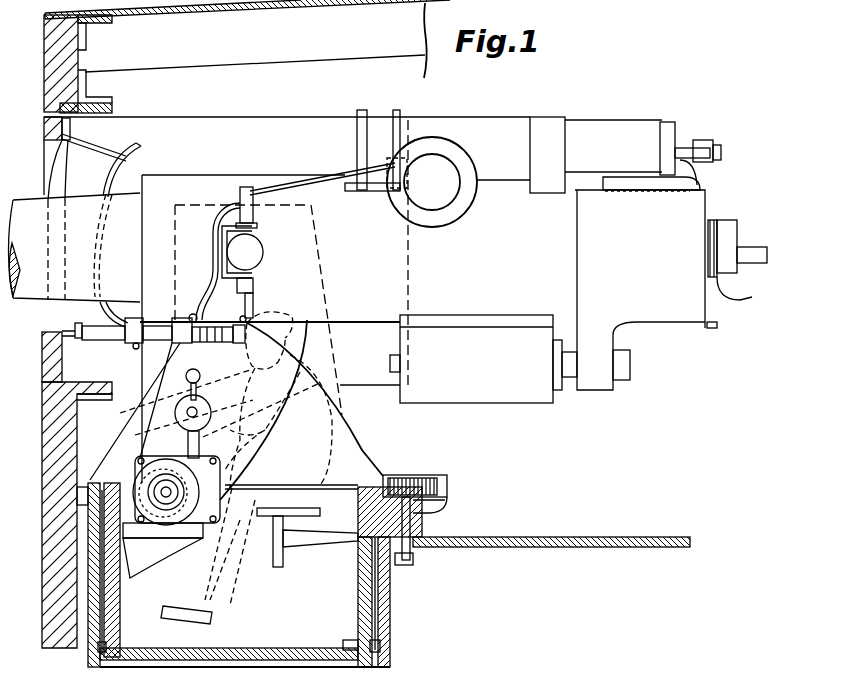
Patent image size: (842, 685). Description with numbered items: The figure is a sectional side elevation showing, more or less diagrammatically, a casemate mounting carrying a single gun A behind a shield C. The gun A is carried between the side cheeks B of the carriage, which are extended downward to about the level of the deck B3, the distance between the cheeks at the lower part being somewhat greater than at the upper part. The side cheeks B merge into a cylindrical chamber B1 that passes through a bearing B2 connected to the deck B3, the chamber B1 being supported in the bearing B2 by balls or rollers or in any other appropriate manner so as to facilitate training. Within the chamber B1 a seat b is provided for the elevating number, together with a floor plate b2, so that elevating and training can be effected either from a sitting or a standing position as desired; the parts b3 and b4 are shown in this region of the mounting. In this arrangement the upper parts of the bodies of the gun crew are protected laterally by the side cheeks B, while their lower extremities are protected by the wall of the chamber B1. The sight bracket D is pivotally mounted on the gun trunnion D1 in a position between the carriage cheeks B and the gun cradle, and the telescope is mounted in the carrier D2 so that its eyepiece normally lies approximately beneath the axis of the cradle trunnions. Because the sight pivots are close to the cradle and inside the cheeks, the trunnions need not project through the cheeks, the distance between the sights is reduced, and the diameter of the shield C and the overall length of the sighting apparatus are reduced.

The gun A is at (75, 260).
The side cheek of the carriage B is at (317, 357).
The cylindrical chamber B1 is at (245, 631).
The bearing B2 is at (377, 613).
The deck B3 is at (453, 538).
The seat b is at (311, 514).
The floor plate b2 is at (350, 650).
The flange b3 is at (448, 484).
The hanger b4 is at (137, 408).
The shield C is at (66, 329).
The sight bracket D is at (315, 242).
The gun trunnion D1 is at (257, 255).
The telescope carrier D2 is at (227, 303).